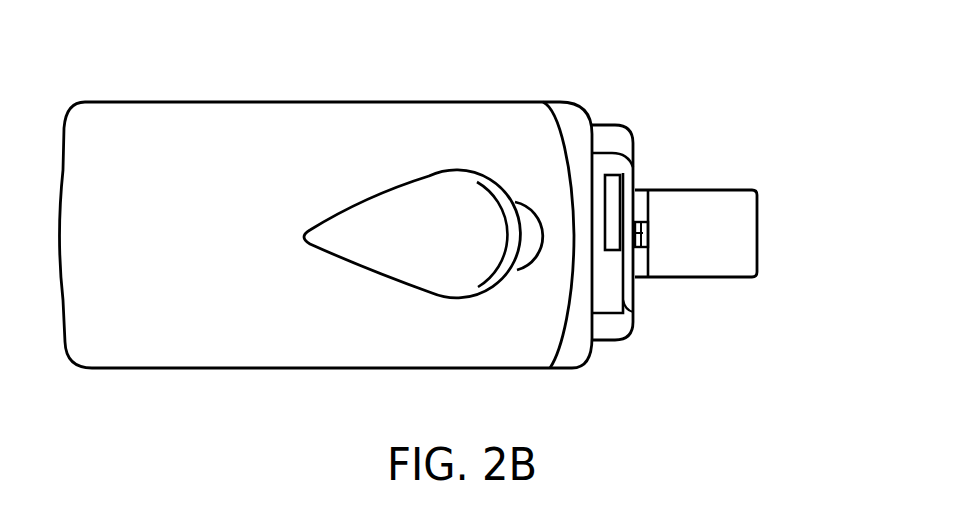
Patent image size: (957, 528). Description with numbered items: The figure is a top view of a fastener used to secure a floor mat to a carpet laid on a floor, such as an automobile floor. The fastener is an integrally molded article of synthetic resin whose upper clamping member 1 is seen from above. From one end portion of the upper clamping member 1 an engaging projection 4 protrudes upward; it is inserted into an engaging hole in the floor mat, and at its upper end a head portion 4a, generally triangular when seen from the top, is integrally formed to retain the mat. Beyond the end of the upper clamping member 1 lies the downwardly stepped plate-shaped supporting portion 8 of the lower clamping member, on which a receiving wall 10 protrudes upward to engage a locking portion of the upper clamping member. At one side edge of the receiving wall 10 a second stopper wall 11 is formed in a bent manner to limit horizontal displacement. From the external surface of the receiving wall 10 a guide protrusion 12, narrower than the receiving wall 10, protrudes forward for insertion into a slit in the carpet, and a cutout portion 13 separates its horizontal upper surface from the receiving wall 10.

The upper clamping member 1 is at (152, 125).
The engaging projection 4 is at (533, 222).
The head portion 4a is at (418, 200).
The supporting portion 8 is at (603, 335).
The receiving wall 10 is at (628, 292).
The second stopper wall 11 is at (603, 160).
The guide protrusion 12 is at (743, 235).
The cutout portion 13 is at (645, 228).